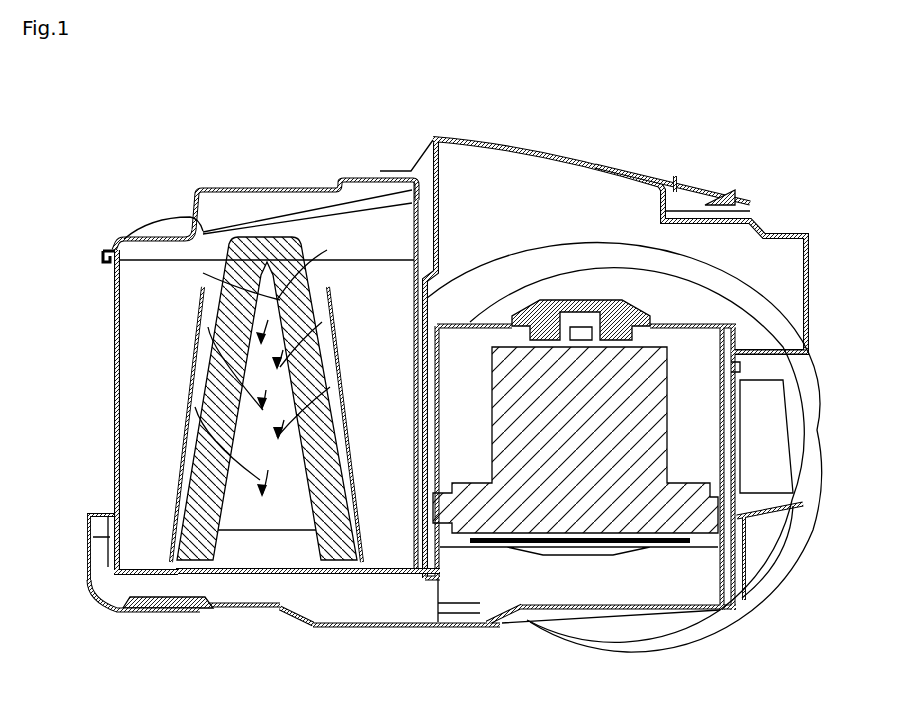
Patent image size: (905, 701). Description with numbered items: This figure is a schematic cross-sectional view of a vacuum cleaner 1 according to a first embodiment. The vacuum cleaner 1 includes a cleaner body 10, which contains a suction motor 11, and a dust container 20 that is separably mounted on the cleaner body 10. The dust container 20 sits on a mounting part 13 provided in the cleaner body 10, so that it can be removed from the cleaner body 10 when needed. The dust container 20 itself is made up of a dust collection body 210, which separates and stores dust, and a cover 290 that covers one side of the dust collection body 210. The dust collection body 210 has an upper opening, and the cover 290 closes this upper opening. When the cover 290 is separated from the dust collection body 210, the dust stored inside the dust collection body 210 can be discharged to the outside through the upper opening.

The vacuum cleaner 1 is at (646, 101).
The cleaner body 10 is at (760, 223).
The suction motor 11 is at (663, 422).
The mounting part 13 is at (100, 560).
The dust container 20 is at (110, 205).
The dust collection body 210 is at (113, 369).
The cover 290 is at (166, 226).